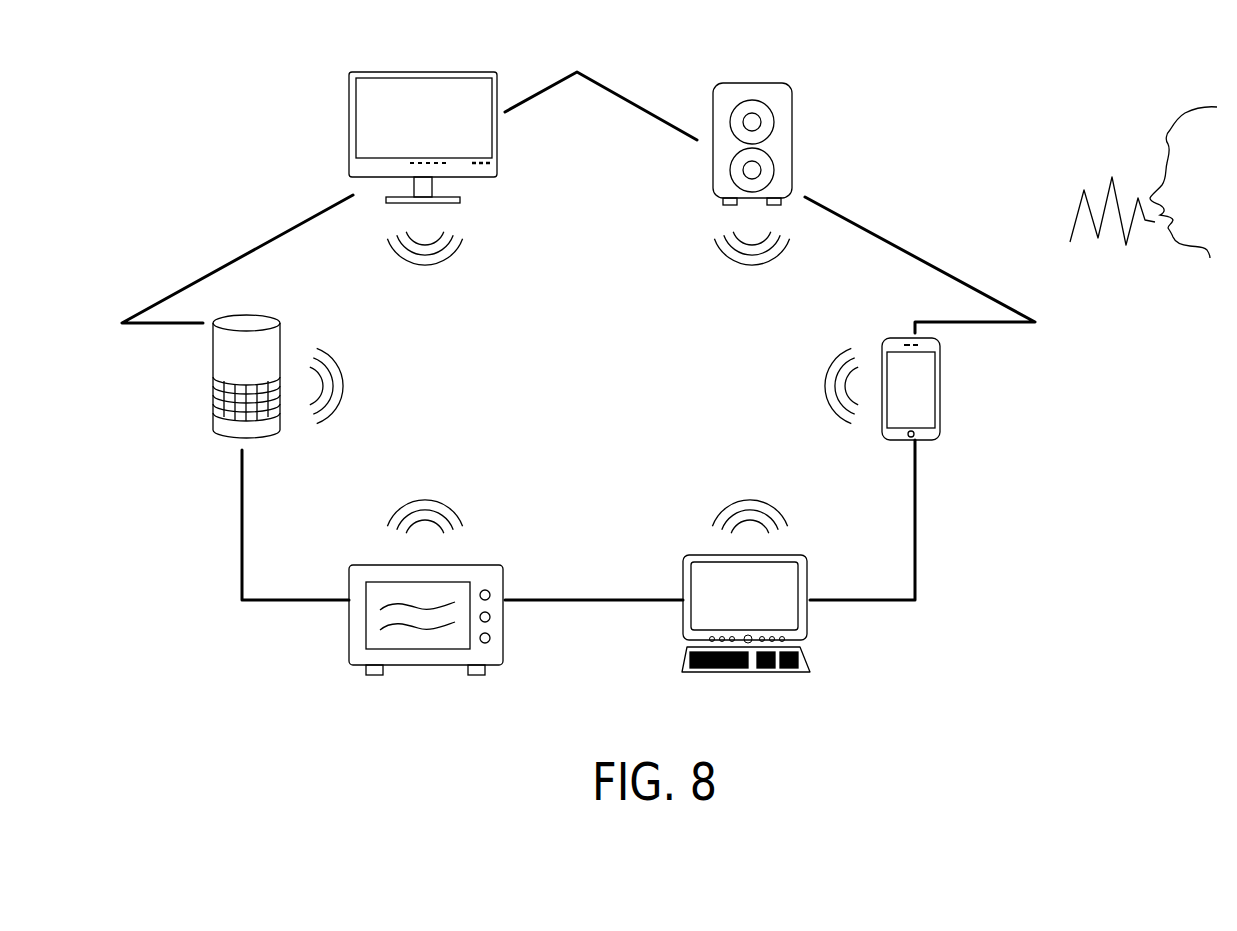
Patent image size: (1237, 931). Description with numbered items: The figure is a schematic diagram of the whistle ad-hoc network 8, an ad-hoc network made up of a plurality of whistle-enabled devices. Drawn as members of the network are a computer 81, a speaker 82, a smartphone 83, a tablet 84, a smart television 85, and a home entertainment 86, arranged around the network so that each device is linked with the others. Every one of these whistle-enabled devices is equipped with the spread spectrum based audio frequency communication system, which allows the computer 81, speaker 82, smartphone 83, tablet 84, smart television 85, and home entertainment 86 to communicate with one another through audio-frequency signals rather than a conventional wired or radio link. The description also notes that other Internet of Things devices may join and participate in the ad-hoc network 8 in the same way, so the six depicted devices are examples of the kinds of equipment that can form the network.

The whistle ad-hoc network 8 is at (592, 384).
The computer 81 is at (350, 126).
The speaker 82 is at (800, 140).
The smartphone 83 is at (942, 390).
The tablet 84 is at (805, 630).
The smart television 85 is at (350, 653).
The home entertainment 86 is at (213, 388).